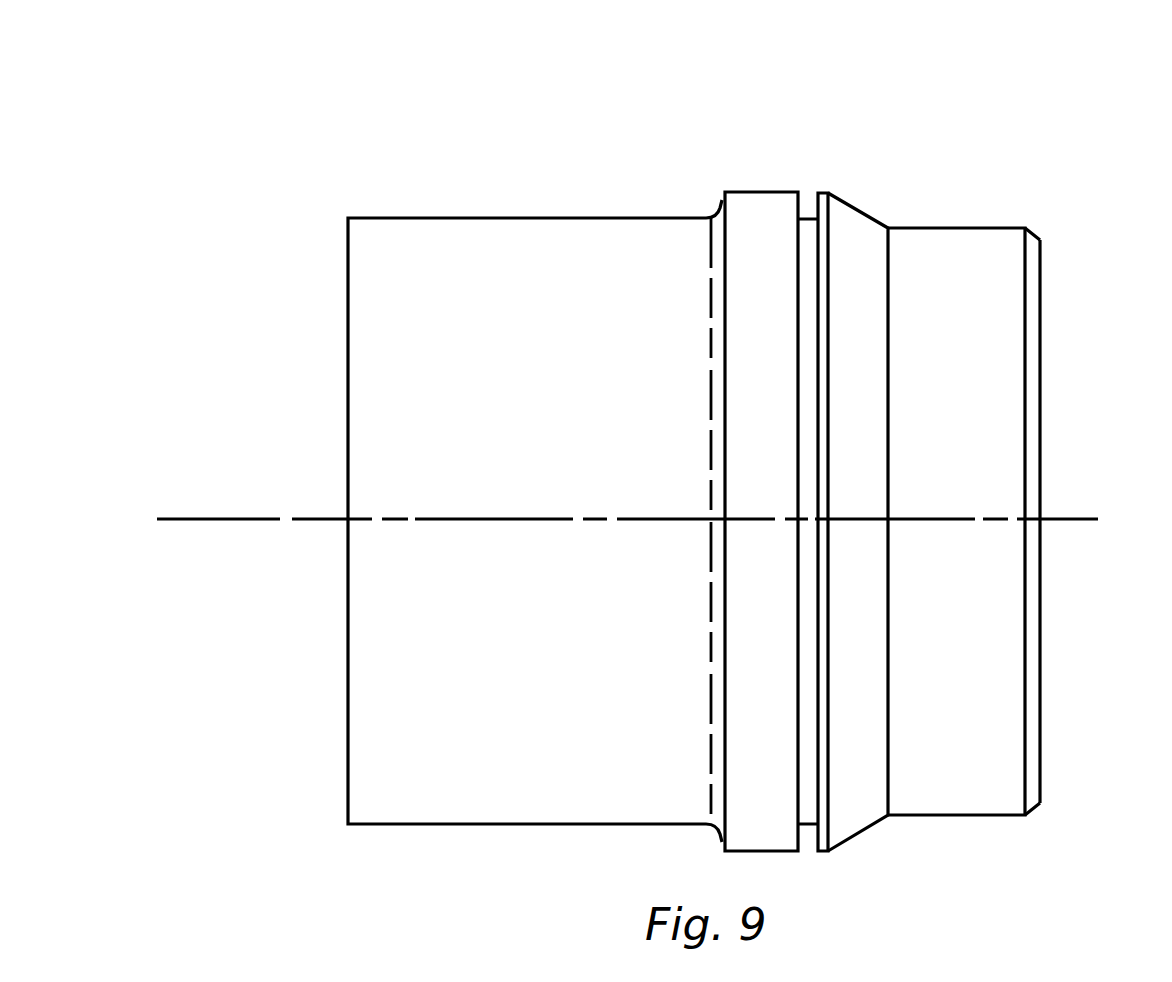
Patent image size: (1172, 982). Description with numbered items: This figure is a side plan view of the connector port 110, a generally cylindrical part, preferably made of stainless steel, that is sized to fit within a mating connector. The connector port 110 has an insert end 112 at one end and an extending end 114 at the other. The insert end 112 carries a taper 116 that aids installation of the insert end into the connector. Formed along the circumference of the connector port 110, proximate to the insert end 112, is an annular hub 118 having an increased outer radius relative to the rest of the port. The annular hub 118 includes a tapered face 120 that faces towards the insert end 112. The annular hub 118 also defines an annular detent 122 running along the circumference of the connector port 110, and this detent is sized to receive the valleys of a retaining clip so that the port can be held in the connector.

The connector port 110 is at (992, 118).
The insert end 112 is at (1047, 262).
The extending end 114 is at (346, 378).
The taper 116 is at (1037, 232).
The annular hub 118 is at (783, 206).
The tapered face 120 is at (848, 228).
The annular detent 122 is at (806, 230).